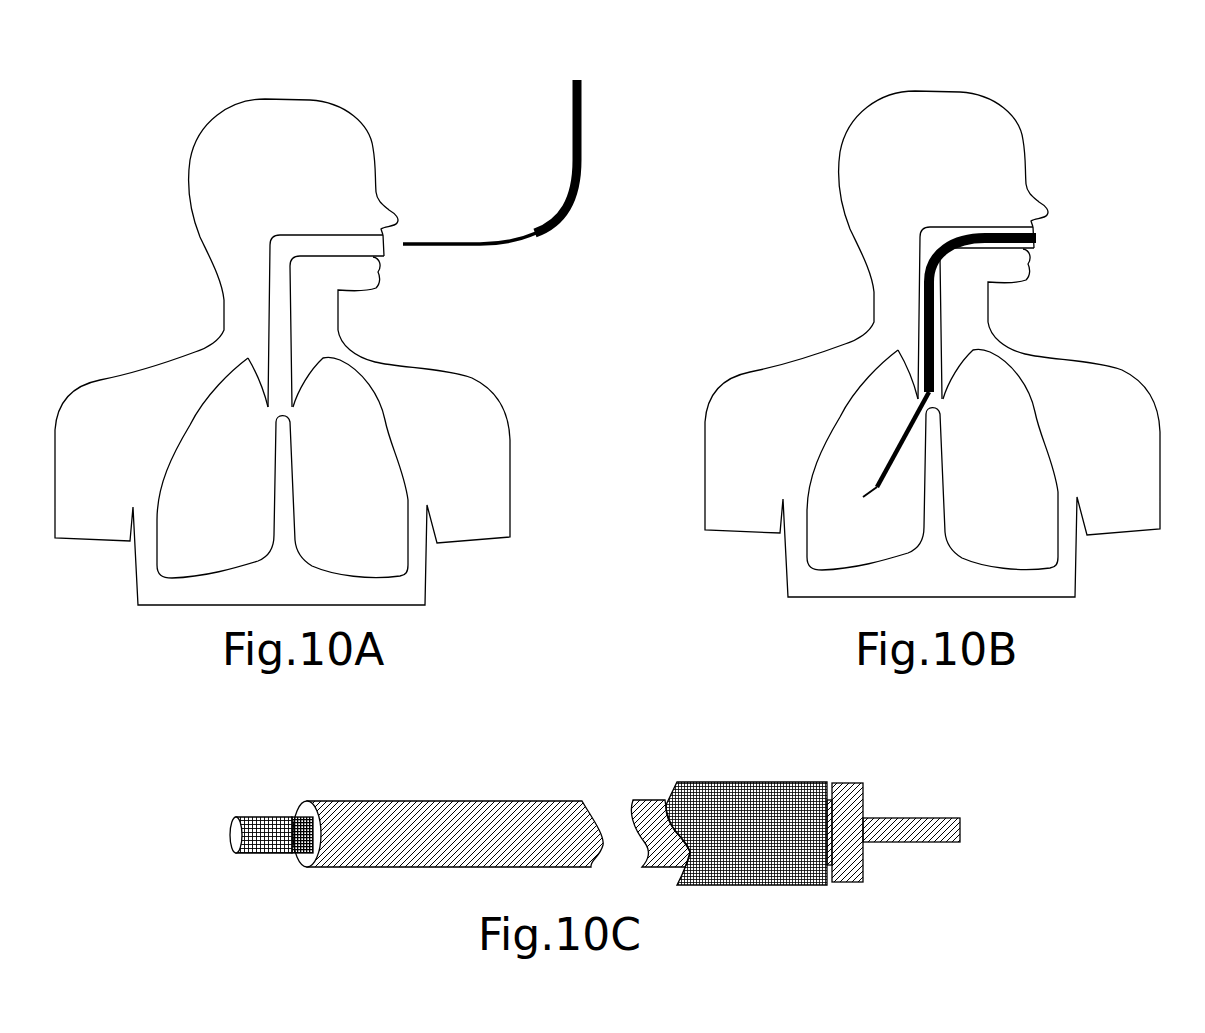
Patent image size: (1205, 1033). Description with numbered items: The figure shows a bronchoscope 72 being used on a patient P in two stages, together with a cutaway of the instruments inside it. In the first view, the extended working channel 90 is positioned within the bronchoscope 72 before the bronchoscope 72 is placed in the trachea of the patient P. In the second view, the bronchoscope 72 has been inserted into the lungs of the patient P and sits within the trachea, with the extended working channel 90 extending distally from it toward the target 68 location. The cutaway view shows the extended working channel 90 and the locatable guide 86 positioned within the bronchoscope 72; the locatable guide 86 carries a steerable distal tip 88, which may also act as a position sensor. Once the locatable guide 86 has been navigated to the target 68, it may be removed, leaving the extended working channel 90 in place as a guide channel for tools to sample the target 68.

In FIG. 10A, the patient P is at (353, 112).
In FIG. 10B, the patient P is at (988, 102).
In FIG. 10A, the target 68 is at (218, 503).
In FIG. 10B, the target 68 is at (862, 497).
In FIG. 10A, the bronchoscope 72 is at (580, 163).
In FIG. 10B, the bronchoscope 72 is at (1040, 240).
In FIG. 10C, the bronchoscope 72 is at (763, 782).
In FIG. 10A, the extended working channel 90 is at (470, 245).
In FIG. 10B, the extended working channel 90 is at (890, 452).
In FIG. 10C, the extended working channel 90 is at (512, 802).
In FIG. 10C, the locatable guide 86 is at (305, 817).
In FIG. 10C, the steerable distal tip 88 is at (247, 816).